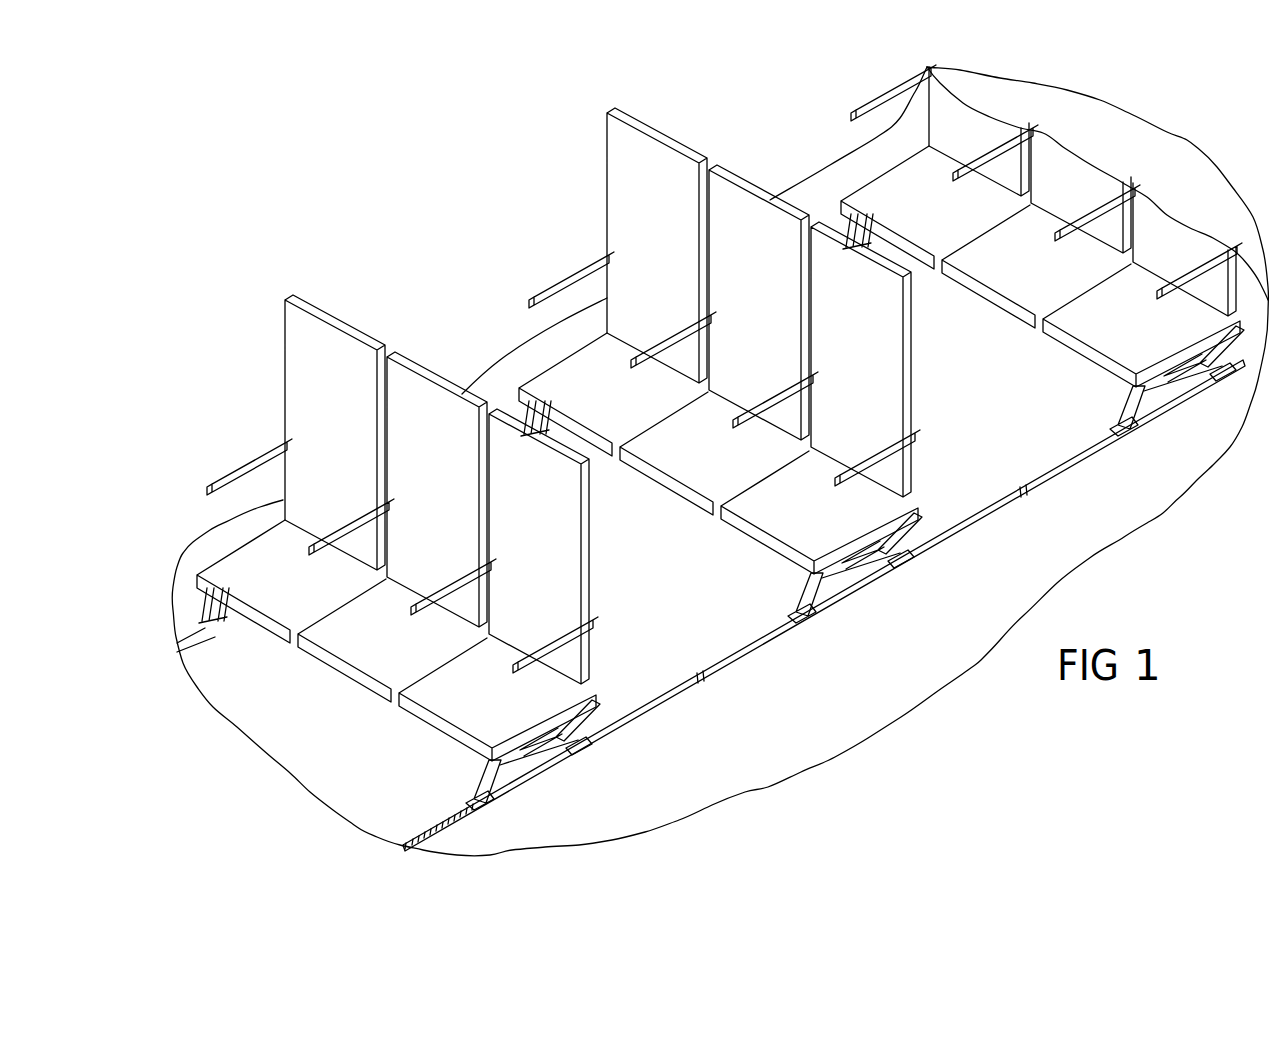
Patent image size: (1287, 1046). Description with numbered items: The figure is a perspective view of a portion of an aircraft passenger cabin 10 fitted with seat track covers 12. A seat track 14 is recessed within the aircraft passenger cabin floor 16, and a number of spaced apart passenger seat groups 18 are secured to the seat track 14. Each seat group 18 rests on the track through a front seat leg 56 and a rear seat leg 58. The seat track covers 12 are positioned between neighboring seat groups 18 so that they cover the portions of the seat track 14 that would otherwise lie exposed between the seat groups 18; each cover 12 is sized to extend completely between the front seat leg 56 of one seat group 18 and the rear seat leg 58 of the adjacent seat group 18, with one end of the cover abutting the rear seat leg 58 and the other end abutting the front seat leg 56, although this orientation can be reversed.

The aircraft passenger cabin 10 is at (452, 170).
The seat track cover 12 is at (765, 645).
The seat track 14 is at (462, 810).
The aircraft passenger cabin floor 16 is at (328, 786).
The passenger seat group 18 is at (300, 384).
The front seat leg 56 is at (472, 797).
The rear seat leg 58 is at (577, 745).